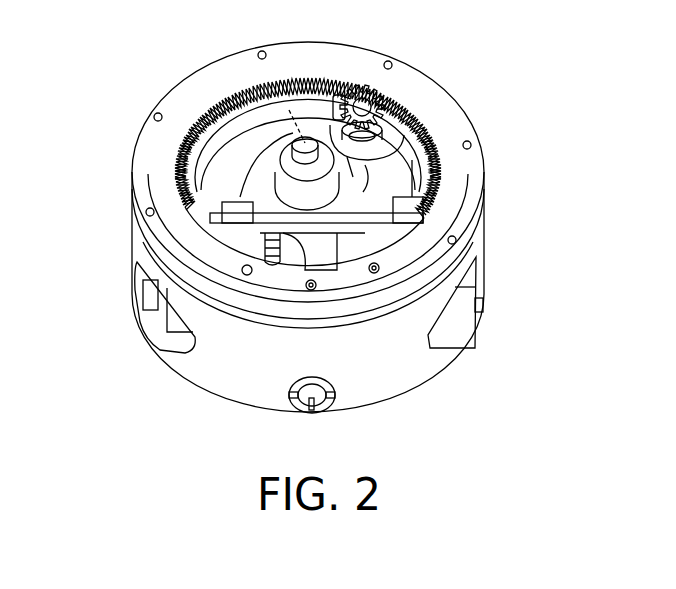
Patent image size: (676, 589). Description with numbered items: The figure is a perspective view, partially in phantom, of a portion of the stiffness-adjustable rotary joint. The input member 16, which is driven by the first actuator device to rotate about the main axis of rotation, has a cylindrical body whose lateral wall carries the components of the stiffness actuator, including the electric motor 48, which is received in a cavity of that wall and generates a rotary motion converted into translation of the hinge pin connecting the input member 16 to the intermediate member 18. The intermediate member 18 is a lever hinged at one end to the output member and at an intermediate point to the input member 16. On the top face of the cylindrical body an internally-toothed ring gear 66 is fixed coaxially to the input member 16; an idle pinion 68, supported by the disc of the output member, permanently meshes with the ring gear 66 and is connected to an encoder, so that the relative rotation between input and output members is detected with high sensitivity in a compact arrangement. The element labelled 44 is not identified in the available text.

The input member 16 is at (397, 372).
The intermediate member 18 is at (300, 250).
The ring gear 44 is at (258, 84).
The electric motor 48 is at (480, 332).
The internally-toothed ring gear 66 is at (158, 157).
The idle pinion 68 is at (413, 120).